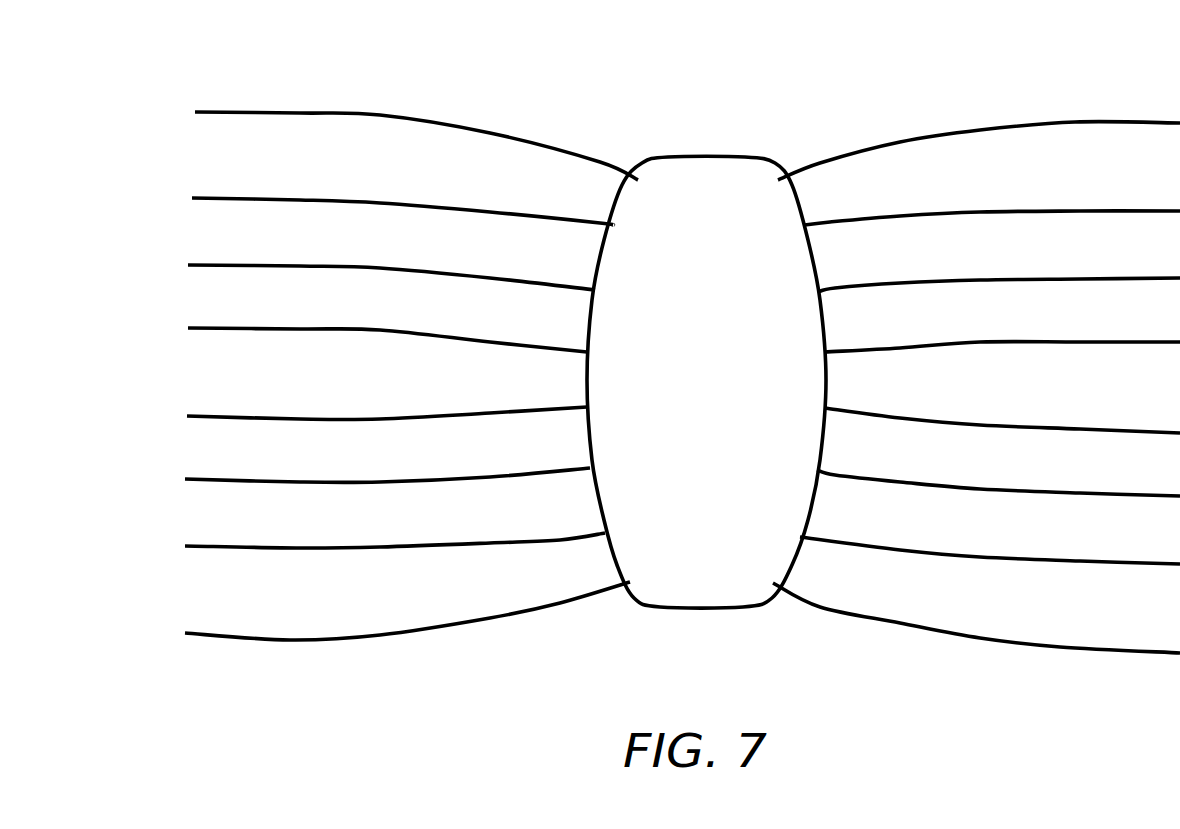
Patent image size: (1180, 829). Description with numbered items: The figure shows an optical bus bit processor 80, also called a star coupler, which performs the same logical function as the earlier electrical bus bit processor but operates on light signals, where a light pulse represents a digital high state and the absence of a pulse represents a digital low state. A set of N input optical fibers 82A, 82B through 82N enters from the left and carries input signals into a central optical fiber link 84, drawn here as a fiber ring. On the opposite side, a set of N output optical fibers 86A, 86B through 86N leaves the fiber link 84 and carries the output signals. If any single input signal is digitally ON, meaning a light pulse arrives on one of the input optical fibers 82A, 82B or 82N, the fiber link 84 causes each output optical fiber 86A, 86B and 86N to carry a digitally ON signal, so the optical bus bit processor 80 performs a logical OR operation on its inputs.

The optical bus bit processor 80 is at (667, 121).
The input optical fiber 82A is at (278, 110).
The input optical fiber 82B is at (266, 197).
The input optical fiber 82N is at (263, 637).
The optical fiber link 84 is at (725, 157).
The output optical fiber 86A is at (1075, 122).
The output optical fiber 86B is at (1082, 213).
The output optical fiber 86N is at (970, 637).